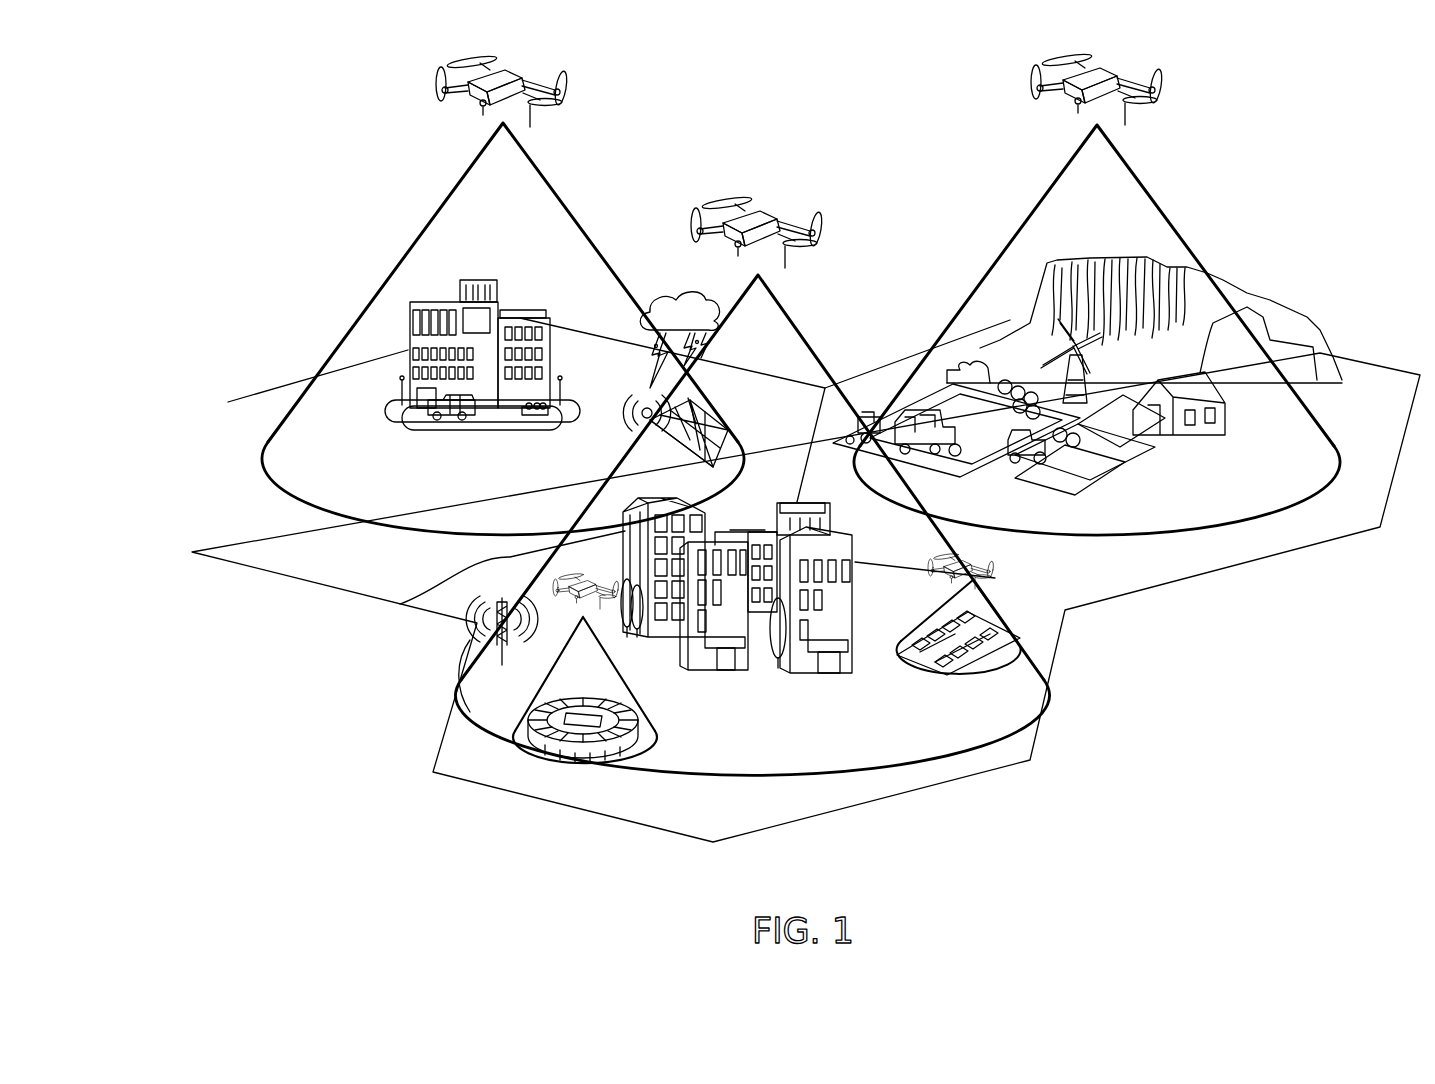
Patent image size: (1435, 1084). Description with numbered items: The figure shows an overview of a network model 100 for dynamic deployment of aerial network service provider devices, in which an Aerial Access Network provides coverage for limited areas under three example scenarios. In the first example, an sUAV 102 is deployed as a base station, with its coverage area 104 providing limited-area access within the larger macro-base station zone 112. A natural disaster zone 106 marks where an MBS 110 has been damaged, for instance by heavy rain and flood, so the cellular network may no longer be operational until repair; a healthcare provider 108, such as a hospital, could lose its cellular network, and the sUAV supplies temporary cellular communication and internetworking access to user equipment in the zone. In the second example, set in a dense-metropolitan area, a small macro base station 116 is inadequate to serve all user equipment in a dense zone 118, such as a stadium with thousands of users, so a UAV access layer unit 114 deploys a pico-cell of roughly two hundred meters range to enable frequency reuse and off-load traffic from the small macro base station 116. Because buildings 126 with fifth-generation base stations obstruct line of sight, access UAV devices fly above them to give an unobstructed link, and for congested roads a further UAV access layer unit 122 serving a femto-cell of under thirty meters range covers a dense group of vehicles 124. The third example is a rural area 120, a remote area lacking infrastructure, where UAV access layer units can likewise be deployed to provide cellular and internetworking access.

The system 100 is at (270, 102).
The sUAV 102 is at (437, 100).
The coverage area 104 is at (443, 203).
The natural disaster zone 106 is at (659, 293).
The healthcare provider 108 is at (423, 302).
The MBS 110 is at (698, 425).
The macro-base station zone 112 is at (210, 477).
The UAV access layer unit 114 is at (560, 592).
The small macro base station 116 is at (472, 628).
The dense zone 118 is at (523, 733).
The rural area 120 is at (1233, 323).
The unmanned aerial vehicle 122 is at (990, 568).
The parking lot with vehicles 124 is at (1025, 647).
The buildings 126 is at (818, 663).